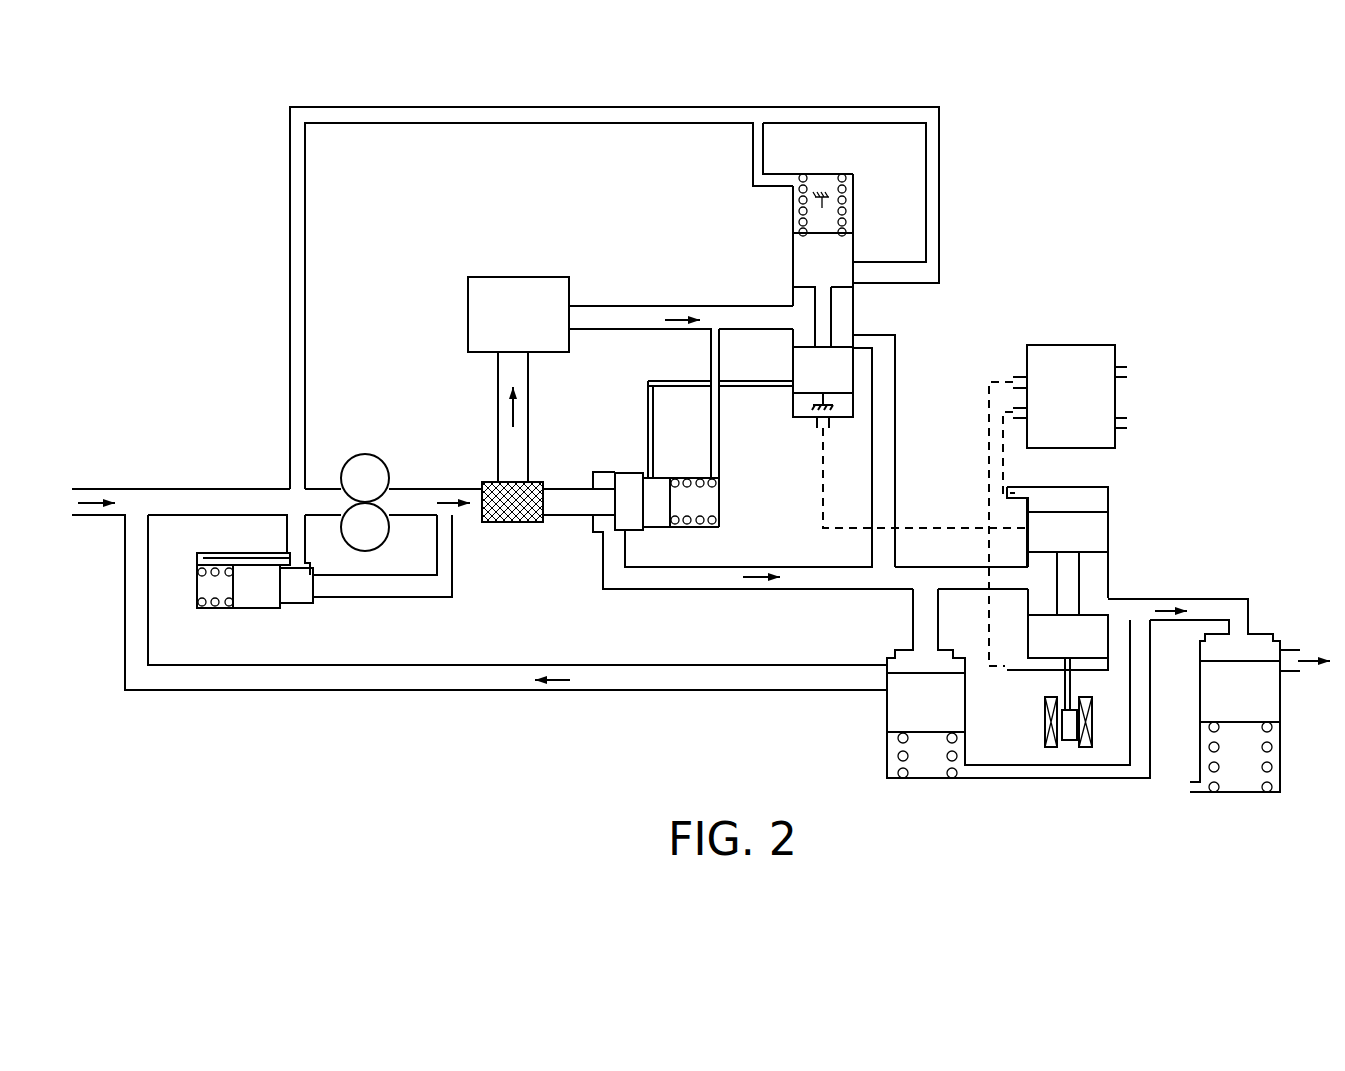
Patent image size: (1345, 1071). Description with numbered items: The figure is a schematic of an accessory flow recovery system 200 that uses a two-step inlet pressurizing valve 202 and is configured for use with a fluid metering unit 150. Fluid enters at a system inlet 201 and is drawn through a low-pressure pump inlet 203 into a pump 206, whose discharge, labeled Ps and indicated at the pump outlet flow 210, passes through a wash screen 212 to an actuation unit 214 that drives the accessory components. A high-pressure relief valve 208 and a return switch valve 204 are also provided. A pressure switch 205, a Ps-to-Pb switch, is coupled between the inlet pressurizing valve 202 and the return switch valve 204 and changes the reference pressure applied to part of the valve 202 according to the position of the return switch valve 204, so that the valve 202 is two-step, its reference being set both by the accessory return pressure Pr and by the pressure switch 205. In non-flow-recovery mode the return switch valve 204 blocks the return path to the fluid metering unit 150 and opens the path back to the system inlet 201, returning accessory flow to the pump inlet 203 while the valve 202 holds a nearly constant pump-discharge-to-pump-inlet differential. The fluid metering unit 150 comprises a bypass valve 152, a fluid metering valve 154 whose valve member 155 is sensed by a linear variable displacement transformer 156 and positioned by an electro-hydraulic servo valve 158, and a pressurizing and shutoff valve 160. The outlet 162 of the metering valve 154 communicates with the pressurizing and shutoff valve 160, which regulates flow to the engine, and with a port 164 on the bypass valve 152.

The accessory flow recovery system 200 is at (1003, 195).
The system inlet 201 is at (74, 495).
The low-pressure pump inlet 203 is at (335, 503).
The pump 206 is at (370, 454).
The pump outlet flow 210 is at (432, 478).
The wash screen 212 is at (522, 524).
The actuation unit 214 is at (518, 277).
The inlet pressurizing valve 202 is at (678, 530).
The return switch valve 204 is at (853, 320).
The pressure switch 205 is at (757, 388).
The high-pressure relief valve 208 is at (294, 610).
The fluid metering unit 150 is at (1244, 444).
The bypass valve 152 is at (887, 758).
The fluid metering valve 154 is at (1108, 570).
The valve member 155 is at (1110, 528).
The linear variable displacement transformer 156 is at (1045, 712).
The electro-hydraulic servo valve 158 is at (1078, 345).
The pressurizing and shutoff valve 160 is at (1280, 773).
The outlet 162 is at (1150, 603).
The port 164 is at (968, 772).